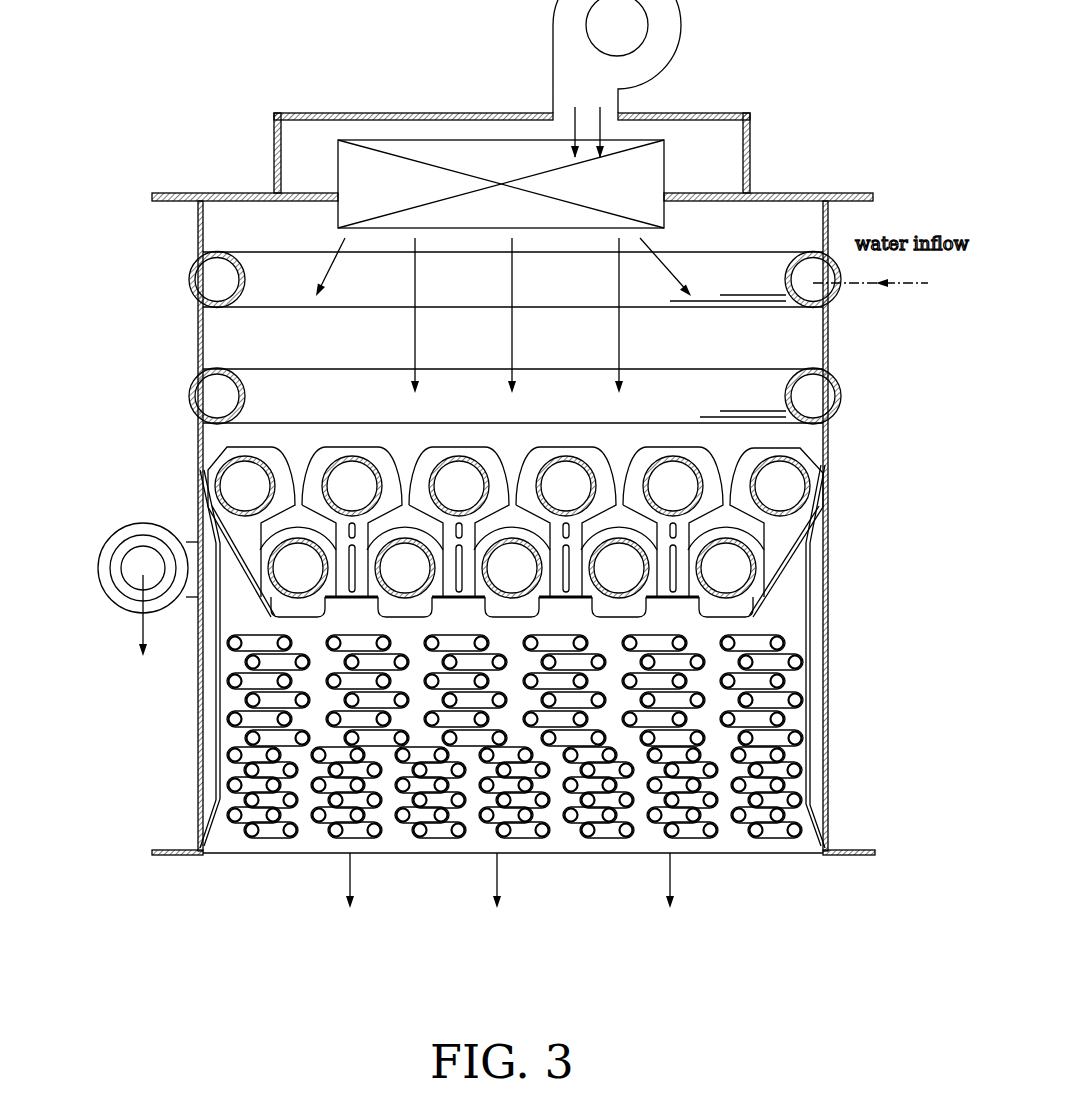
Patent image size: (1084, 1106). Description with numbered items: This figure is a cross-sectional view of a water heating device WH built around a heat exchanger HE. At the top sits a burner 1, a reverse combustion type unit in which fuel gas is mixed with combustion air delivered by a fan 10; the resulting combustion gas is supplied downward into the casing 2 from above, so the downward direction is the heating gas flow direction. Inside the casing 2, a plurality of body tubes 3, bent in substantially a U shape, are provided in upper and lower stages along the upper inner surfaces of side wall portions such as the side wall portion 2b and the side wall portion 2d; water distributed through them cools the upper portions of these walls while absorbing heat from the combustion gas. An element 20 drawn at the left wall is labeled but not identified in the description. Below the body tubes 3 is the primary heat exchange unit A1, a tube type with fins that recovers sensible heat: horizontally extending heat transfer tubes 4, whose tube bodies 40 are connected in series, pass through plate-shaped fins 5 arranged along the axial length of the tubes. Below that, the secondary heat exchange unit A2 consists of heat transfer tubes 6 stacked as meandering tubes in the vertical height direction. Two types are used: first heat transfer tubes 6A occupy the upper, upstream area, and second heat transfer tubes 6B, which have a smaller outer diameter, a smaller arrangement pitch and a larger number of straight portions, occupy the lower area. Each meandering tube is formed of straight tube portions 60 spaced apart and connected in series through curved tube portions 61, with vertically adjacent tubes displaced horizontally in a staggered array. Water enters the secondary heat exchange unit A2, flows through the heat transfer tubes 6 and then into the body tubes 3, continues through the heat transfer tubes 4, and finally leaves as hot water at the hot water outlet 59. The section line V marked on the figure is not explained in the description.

The water heating device WH is at (180, 103).
The heat exchanger HE is at (194, 238).
The fan 10 is at (668, 36).
The burner 1 is at (652, 174).
The casing 2 is at (500, 526).
The case side wall 20 is at (198, 352).
The side wall portion 2b is at (829, 338).
The side wall portion 2d is at (198, 450).
The body tube 3 is at (243, 282).
The heat transfer tube 4 is at (597, 459).
The fin 5 is at (432, 461).
The tube body 40 is at (347, 460).
The hot water outlet 59 is at (143, 555).
The heat transfer tube 6 is at (572, 744).
The first heat transfer tube 6A is at (786, 641).
The second heat transfer tube 6B is at (796, 754).
The straight tube portion 60 is at (627, 641).
The curved tube portion 61 is at (652, 643).
The primary heat exchange unit A1 is at (437, 432).
The secondary heat exchange unit A2 is at (810, 630).
The section line V is at (387, 440).